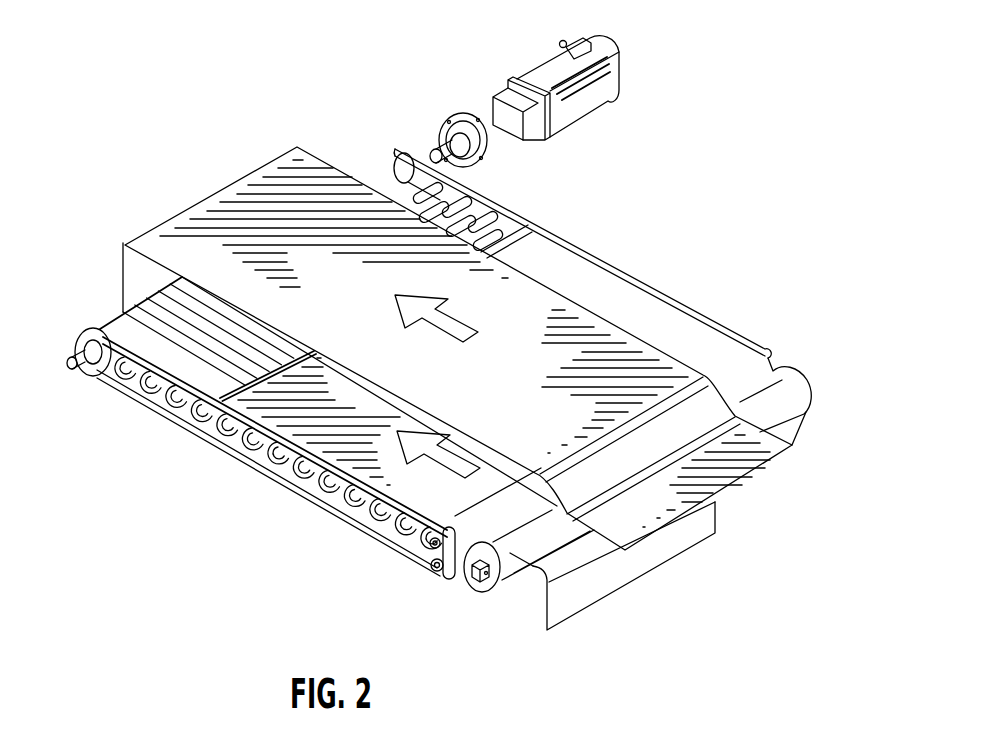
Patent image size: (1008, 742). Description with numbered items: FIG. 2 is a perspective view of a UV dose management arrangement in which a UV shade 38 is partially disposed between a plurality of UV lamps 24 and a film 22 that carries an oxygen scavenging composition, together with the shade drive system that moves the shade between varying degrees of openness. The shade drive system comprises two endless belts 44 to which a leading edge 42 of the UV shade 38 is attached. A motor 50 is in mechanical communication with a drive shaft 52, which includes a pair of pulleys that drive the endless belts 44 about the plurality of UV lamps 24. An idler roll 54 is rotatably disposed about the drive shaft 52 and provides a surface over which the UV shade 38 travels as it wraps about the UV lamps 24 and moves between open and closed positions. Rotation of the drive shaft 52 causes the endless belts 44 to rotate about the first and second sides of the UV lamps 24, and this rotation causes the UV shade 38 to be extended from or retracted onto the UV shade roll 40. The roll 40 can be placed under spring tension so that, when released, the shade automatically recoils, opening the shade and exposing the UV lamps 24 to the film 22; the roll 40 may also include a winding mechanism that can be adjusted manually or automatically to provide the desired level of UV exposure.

The film 22 is at (792, 445).
The UV lamps 24 is at (472, 210).
The UV shade 38 is at (777, 371).
The UV shade roll 40 is at (495, 592).
The leading edge 42 is at (523, 220).
The endless belts 44 is at (412, 152).
The motor 50 is at (613, 78).
The drive shaft 52 is at (67, 364).
The idler roll 54 is at (108, 336).